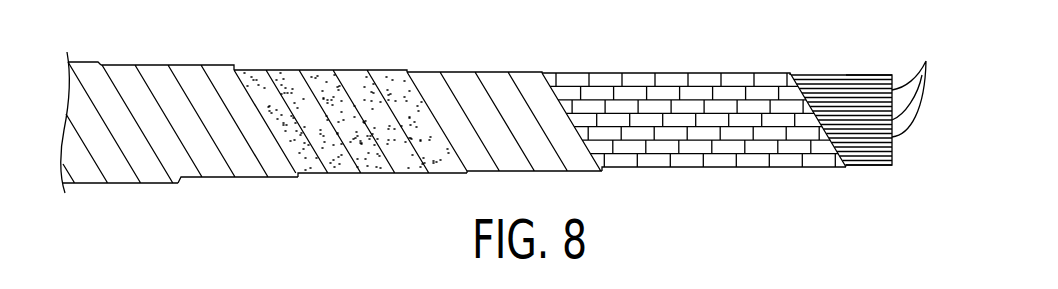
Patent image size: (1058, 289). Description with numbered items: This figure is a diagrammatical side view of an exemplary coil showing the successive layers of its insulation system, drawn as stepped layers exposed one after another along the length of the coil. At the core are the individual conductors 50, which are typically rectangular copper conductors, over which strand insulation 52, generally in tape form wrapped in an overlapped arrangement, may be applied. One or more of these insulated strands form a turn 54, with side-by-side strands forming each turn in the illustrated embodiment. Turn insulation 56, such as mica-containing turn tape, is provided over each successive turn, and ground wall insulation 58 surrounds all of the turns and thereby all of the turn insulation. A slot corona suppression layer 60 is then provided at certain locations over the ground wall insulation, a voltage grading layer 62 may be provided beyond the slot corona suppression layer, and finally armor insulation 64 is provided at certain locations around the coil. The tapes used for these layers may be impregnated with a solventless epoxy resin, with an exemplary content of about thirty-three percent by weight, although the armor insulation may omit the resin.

The conductors 50 is at (916, 85).
The strand insulation 52 is at (803, 78).
The turn 54 is at (854, 64).
The turn insulation 56 is at (640, 82).
The ground wall insulation 58 is at (457, 80).
The slot corona suppression layer 60 is at (318, 80).
The voltage grading layer 62 is at (178, 72).
The armor insulation 64 is at (91, 68).